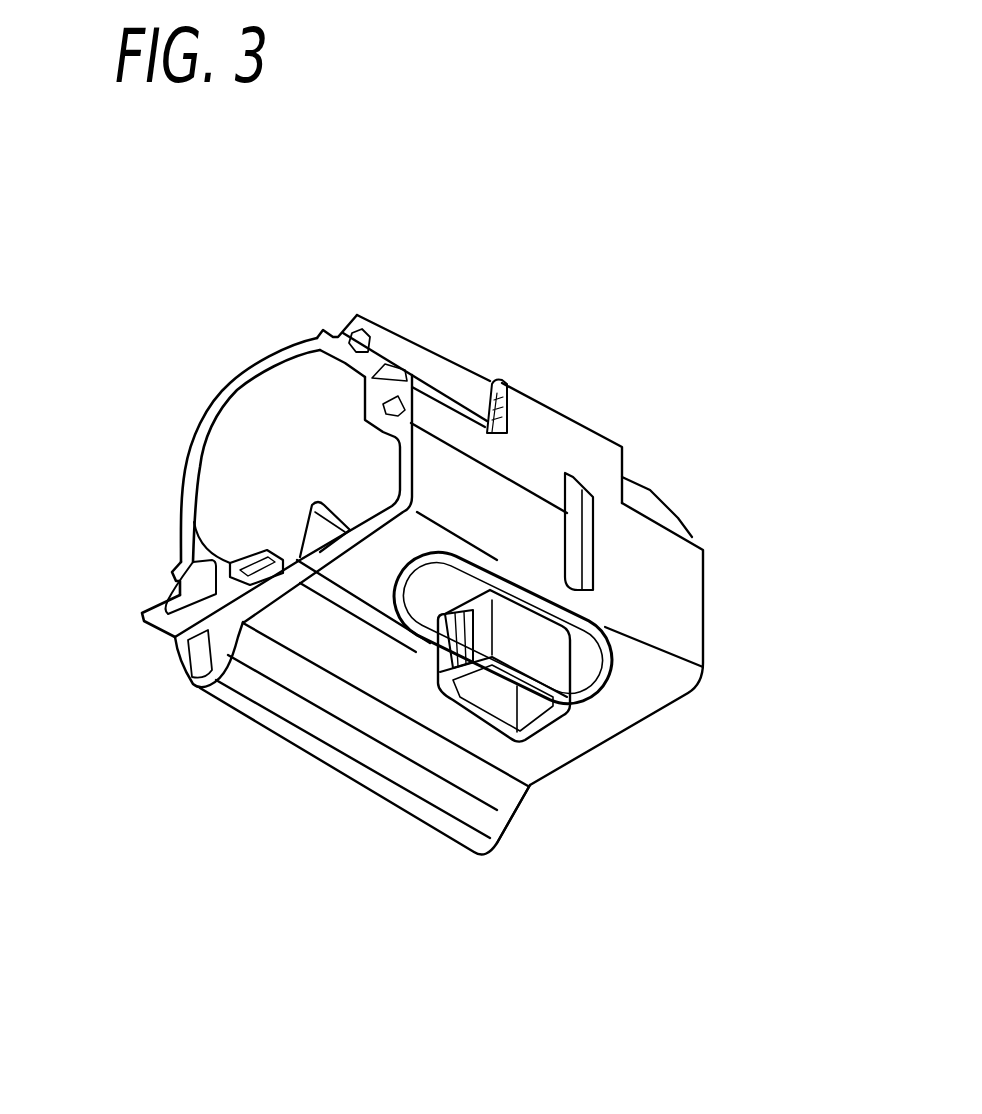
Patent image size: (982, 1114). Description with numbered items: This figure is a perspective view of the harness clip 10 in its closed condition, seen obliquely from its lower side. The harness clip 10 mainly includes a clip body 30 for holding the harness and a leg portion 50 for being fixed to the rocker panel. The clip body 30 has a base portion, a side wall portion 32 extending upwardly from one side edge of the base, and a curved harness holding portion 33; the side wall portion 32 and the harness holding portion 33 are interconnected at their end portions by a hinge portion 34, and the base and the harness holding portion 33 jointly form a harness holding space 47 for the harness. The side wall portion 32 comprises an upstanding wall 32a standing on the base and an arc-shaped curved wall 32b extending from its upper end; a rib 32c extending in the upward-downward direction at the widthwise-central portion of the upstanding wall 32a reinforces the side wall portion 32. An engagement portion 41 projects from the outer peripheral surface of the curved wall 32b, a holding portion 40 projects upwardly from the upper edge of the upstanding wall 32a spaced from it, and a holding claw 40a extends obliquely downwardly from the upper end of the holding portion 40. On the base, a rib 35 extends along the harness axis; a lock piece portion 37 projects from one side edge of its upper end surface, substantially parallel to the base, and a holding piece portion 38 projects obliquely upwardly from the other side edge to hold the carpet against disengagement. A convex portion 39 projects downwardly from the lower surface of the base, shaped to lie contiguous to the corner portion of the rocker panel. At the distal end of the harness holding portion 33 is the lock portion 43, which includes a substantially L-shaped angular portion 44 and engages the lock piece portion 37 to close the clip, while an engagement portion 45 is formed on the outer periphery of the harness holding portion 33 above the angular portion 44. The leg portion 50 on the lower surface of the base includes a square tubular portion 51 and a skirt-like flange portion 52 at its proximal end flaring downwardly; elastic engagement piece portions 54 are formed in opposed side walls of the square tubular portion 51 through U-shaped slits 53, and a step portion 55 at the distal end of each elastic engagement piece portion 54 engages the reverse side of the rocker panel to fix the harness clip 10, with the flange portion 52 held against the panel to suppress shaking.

The harness clip 10 is at (513, 246).
The clip body 30 is at (212, 373).
The side wall portion 32 is at (807, 283).
The upstanding wall 32a is at (657, 533).
The curved wall 32b is at (367, 378).
The rib 32c is at (593, 551).
The harness holding portion 33 is at (263, 348).
The hinge portion 34 is at (317, 333).
The rib 35 is at (294, 565).
The lock piece portion 37 is at (253, 550).
The holding piece portion 38 is at (302, 505).
The convex portion 39 is at (176, 662).
The holding portion 40 is at (568, 425).
The holding claw 40a is at (523, 400).
The engagement portion 41 is at (380, 327).
The lock portion 43 is at (236, 602).
The angular portion 44 is at (172, 632).
The engagement portion 45 is at (168, 562).
The harness holding space 47 is at (272, 444).
The leg portion 50 is at (531, 646).
The square tubular portion 51 is at (594, 693).
The flange portion 52 is at (417, 600).
The U-shaped slit 53 is at (440, 640).
The elastic engagement piece portion 54 is at (478, 712).
The step portion 55 is at (463, 677).